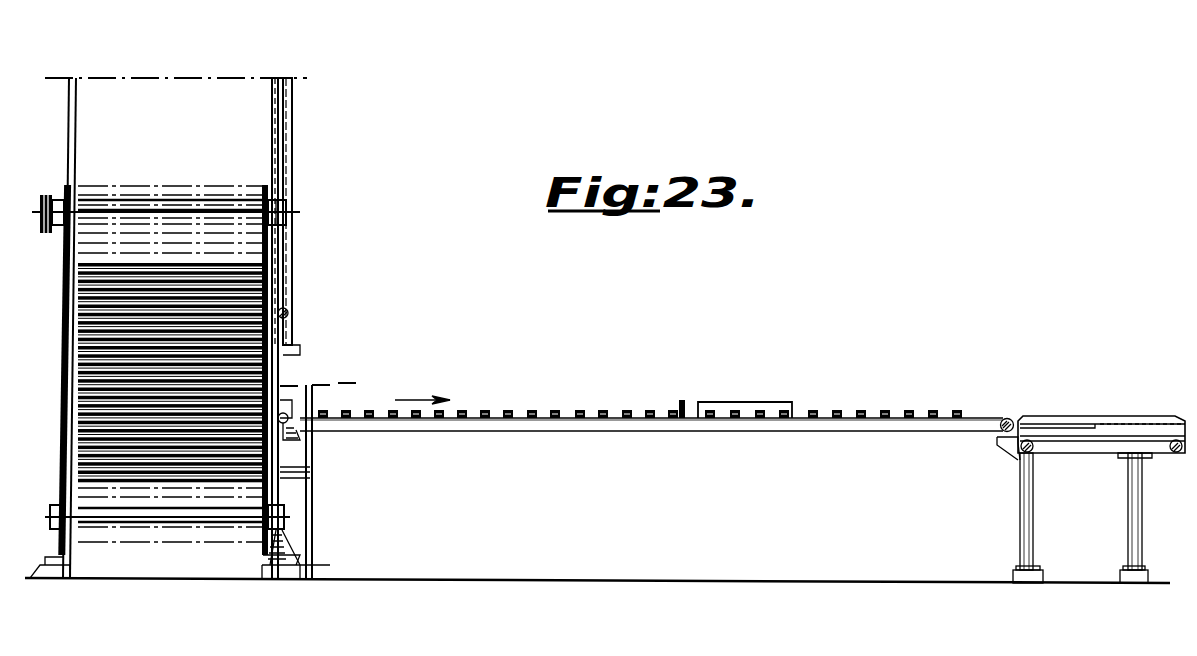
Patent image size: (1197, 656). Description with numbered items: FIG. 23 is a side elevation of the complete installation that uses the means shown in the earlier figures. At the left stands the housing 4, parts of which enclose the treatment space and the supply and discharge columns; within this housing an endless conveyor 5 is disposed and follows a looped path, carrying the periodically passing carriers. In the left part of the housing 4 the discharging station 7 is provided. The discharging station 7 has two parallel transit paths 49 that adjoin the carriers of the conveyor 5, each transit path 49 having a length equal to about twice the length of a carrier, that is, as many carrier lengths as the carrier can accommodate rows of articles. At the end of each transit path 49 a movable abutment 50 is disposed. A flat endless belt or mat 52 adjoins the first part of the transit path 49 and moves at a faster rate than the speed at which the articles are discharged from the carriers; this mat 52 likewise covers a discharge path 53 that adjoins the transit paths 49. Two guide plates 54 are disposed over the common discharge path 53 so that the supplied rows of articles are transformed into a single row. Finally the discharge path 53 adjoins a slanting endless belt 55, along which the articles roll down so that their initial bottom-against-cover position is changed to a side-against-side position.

The housing 4 is at (283, 72).
The endless conveyor 5 is at (247, 180).
The discharging station 7 is at (304, 377).
The transit paths 49 is at (493, 392).
The movable abutment 50 is at (680, 404).
The flat endless belt or mat 52 is at (820, 430).
The discharge path 53 is at (887, 400).
The guide plates 54 is at (752, 402).
The slanting endless belt 55 is at (1072, 410).